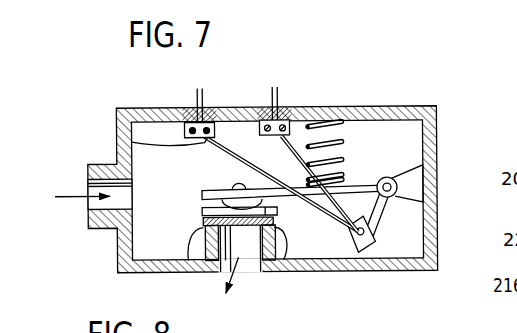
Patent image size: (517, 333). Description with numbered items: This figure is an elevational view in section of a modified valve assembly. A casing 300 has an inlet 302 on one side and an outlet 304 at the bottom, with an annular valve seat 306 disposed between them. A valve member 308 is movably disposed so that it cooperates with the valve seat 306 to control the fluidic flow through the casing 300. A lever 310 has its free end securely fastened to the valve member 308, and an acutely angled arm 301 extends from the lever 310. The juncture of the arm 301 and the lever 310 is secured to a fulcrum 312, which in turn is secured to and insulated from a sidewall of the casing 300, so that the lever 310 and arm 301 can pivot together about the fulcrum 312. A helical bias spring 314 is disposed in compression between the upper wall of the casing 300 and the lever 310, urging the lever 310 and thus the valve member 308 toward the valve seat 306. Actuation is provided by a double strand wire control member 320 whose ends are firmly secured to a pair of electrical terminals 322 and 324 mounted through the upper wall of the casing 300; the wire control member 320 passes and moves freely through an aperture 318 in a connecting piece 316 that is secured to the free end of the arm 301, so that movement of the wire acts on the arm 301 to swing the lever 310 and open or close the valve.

The casing 300 is at (437, 233).
The acutely angled arm 301 is at (378, 230).
The inlet 302 is at (88, 204).
The outlet 304 is at (252, 268).
The annular valve seat 306 is at (188, 261).
The valve member 308 is at (200, 215).
The lever 310 is at (208, 190).
The fulcrum 312 is at (408, 168).
The helical bias spring 314 is at (343, 140).
The connecting piece 316 is at (357, 239).
The aperture 318 is at (363, 248).
The double strand wire control member 320 is at (132, 140).
The electrical terminal 322 is at (198, 94).
The electrical terminal 324 is at (274, 94).